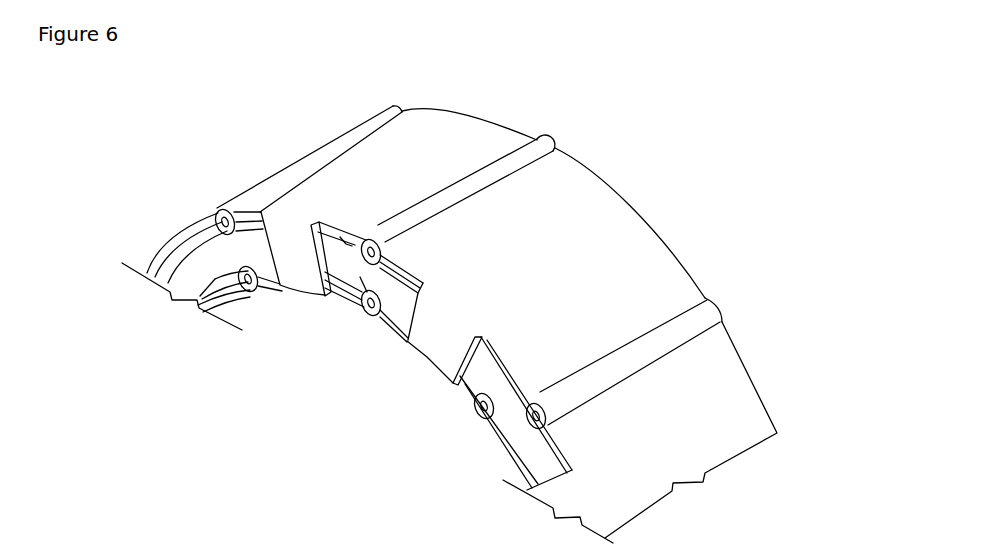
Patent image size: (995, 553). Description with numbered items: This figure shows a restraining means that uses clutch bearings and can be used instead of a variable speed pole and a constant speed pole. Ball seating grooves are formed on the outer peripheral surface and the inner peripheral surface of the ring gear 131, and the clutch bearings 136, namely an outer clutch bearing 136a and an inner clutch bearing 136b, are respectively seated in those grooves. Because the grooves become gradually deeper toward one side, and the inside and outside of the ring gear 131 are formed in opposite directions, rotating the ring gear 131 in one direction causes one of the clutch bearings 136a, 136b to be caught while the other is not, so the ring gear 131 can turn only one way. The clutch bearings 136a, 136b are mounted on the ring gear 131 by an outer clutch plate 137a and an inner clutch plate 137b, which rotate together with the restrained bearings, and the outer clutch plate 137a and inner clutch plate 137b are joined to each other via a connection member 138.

The ring gear 131 is at (203, 263).
The clutch bearings 136 is at (346, 244).
The clutch bearing 136a is at (538, 138).
The clutch bearing 136b is at (370, 318).
The outer clutch plate 137a is at (668, 270).
The inner clutch plate 137b is at (510, 437).
The connection member 138 is at (442, 357).